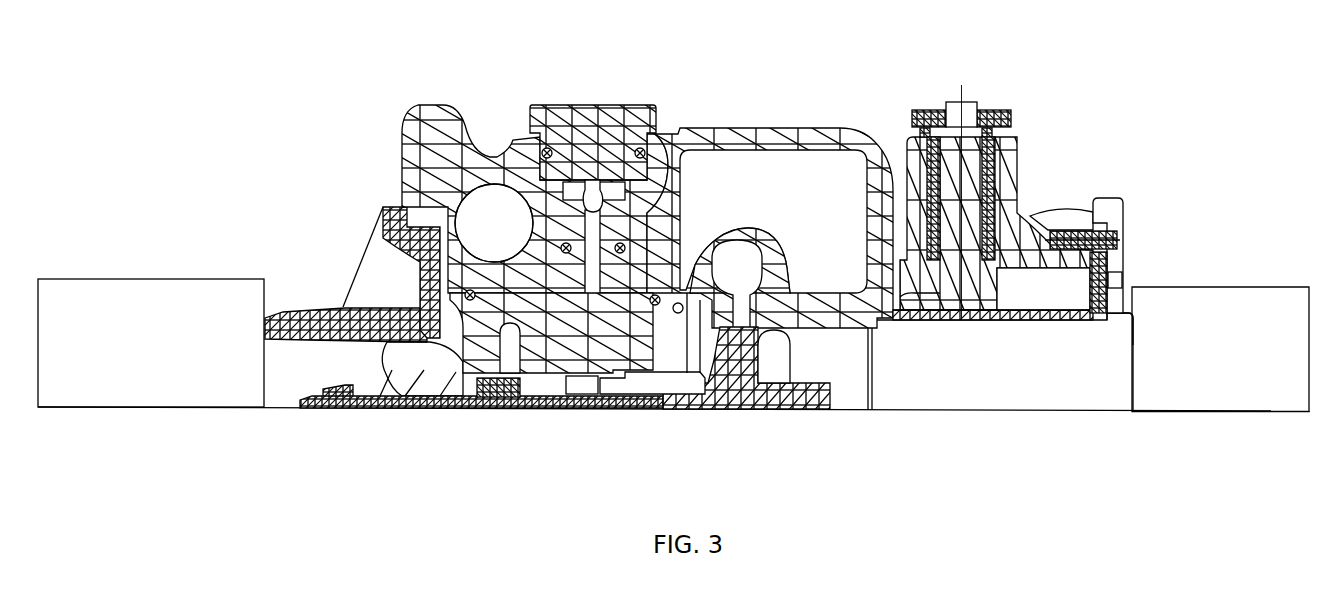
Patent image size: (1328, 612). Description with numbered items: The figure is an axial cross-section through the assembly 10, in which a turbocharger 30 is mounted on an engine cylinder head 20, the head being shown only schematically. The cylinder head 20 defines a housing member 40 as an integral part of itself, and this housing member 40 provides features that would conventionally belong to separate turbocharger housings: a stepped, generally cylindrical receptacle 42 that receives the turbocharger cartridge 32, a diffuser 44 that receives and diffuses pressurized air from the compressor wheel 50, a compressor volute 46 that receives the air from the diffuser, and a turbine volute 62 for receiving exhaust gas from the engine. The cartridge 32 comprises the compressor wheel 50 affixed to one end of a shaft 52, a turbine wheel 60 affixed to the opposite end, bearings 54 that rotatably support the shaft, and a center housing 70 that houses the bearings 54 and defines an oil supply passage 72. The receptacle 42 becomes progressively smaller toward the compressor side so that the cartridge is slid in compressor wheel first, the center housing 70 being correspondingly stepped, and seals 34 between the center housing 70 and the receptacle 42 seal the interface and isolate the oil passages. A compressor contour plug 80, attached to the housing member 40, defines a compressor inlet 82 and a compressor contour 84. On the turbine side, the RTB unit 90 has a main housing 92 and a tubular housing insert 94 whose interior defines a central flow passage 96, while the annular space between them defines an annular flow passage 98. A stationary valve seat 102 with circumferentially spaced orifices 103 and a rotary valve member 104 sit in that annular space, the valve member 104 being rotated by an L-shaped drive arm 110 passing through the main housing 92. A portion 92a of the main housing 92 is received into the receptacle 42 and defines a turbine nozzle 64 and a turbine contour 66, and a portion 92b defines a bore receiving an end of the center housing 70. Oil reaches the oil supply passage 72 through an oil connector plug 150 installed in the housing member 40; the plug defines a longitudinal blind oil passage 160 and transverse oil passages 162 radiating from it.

The assembly 10 is at (1071, 210).
The engine cylinder head 20 is at (1290, 292).
The turbocharger 30 is at (647, 190).
The cartridge 32 is at (575, 397).
The seals 34 is at (467, 293).
The housing member 40 is at (757, 133).
The receptacle 42 is at (520, 270).
The diffuser 44 is at (368, 268).
The compressor volute 46 is at (497, 200).
The compressor wheel 50 is at (407, 362).
The shaft 52 is at (447, 404).
The bearings 54 is at (638, 385).
The turbine wheel 60 is at (747, 390).
The turbine volute 62 is at (737, 267).
The turbine nozzle 64 is at (737, 313).
The turbine contour 66 is at (753, 330).
The center housing 70 is at (537, 338).
The oil supply passage 72 is at (597, 372).
The compressor contour plug 80 is at (338, 322).
The compressor inlet 82 is at (297, 353).
The compressor contour 84 is at (420, 337).
The RTB unit 90 is at (1071, 263).
The main housing 92 is at (1027, 240).
The portion of the main housing 92a is at (915, 248).
The portion of the wastegate housing 92b is at (1125, 205).
The housing insert 94 is at (1057, 323).
The central flow passage 96 is at (1115, 340).
The annular flow passage 98 is at (1017, 307).
The valve seat 102 is at (1118, 242).
The orifices 103 is at (1122, 282).
The rotary valve member 104 is at (1098, 262).
The drive arm 110 is at (1000, 287).
The oil connector plug 150 is at (576, 125).
The blind oil passage 160 is at (597, 323).
The transverse oil passage 162 is at (617, 193).